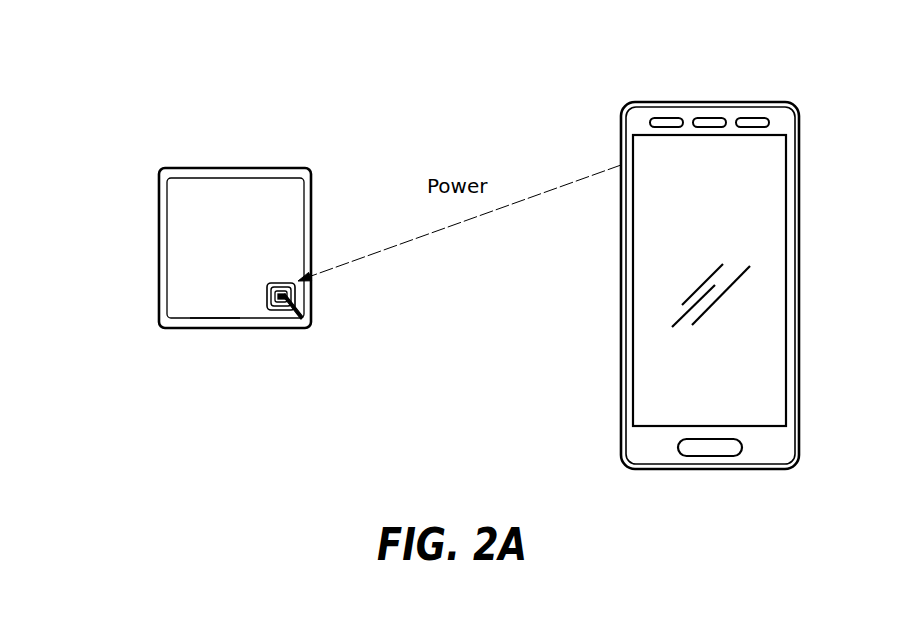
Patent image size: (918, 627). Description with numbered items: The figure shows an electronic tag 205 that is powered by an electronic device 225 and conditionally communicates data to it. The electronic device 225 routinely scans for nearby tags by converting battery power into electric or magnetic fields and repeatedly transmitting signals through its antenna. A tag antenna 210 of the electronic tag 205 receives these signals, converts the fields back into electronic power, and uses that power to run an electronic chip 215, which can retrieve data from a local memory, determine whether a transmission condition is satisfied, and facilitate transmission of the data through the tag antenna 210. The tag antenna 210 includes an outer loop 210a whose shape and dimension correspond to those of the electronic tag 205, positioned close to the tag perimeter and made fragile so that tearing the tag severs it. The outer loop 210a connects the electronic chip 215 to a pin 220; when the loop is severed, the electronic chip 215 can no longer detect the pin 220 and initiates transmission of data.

The electronic tag 205 is at (159, 238).
The pin 220 is at (167, 180).
The tag antenna 210 is at (290, 297).
The outer loop 210a is at (213, 318).
The electronic chip 215 is at (302, 319).
The electronic device 225 is at (621, 137).